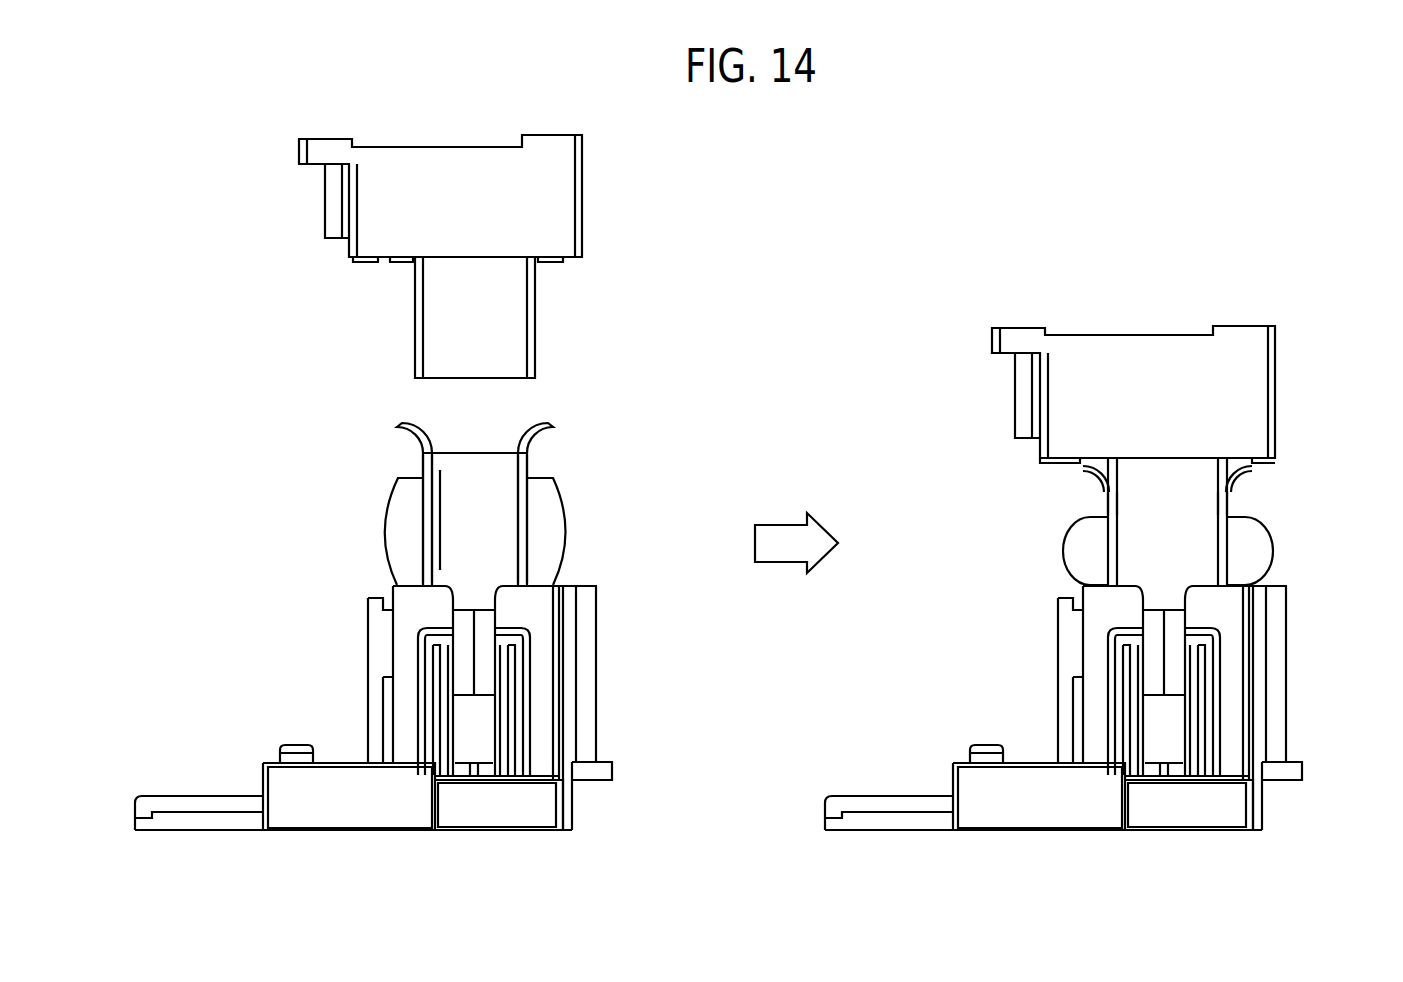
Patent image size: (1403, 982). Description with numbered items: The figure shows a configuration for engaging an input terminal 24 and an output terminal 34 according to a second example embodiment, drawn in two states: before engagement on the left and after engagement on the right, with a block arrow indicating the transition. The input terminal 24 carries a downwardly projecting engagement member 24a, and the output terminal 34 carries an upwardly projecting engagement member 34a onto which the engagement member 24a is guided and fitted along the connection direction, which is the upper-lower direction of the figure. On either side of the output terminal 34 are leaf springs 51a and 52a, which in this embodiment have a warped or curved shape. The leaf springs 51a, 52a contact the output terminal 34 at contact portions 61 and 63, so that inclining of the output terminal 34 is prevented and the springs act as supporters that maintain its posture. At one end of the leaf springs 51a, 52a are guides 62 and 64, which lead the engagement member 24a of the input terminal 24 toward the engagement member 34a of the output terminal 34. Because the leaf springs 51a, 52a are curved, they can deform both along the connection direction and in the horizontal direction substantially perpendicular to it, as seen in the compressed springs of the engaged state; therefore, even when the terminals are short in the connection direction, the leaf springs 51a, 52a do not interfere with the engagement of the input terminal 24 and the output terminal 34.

The input terminal 24 is at (540, 300).
The engagement member 24a is at (498, 348).
The output terminal 34 is at (532, 533).
The engagement member 34a is at (495, 547).
The leaf spring 51a is at (575, 504).
The leaf spring 52a is at (377, 505).
The contact portion 61 is at (533, 463).
The guide 62 is at (552, 436).
The contact portion 63 is at (415, 463).
The guide 64 is at (405, 437).